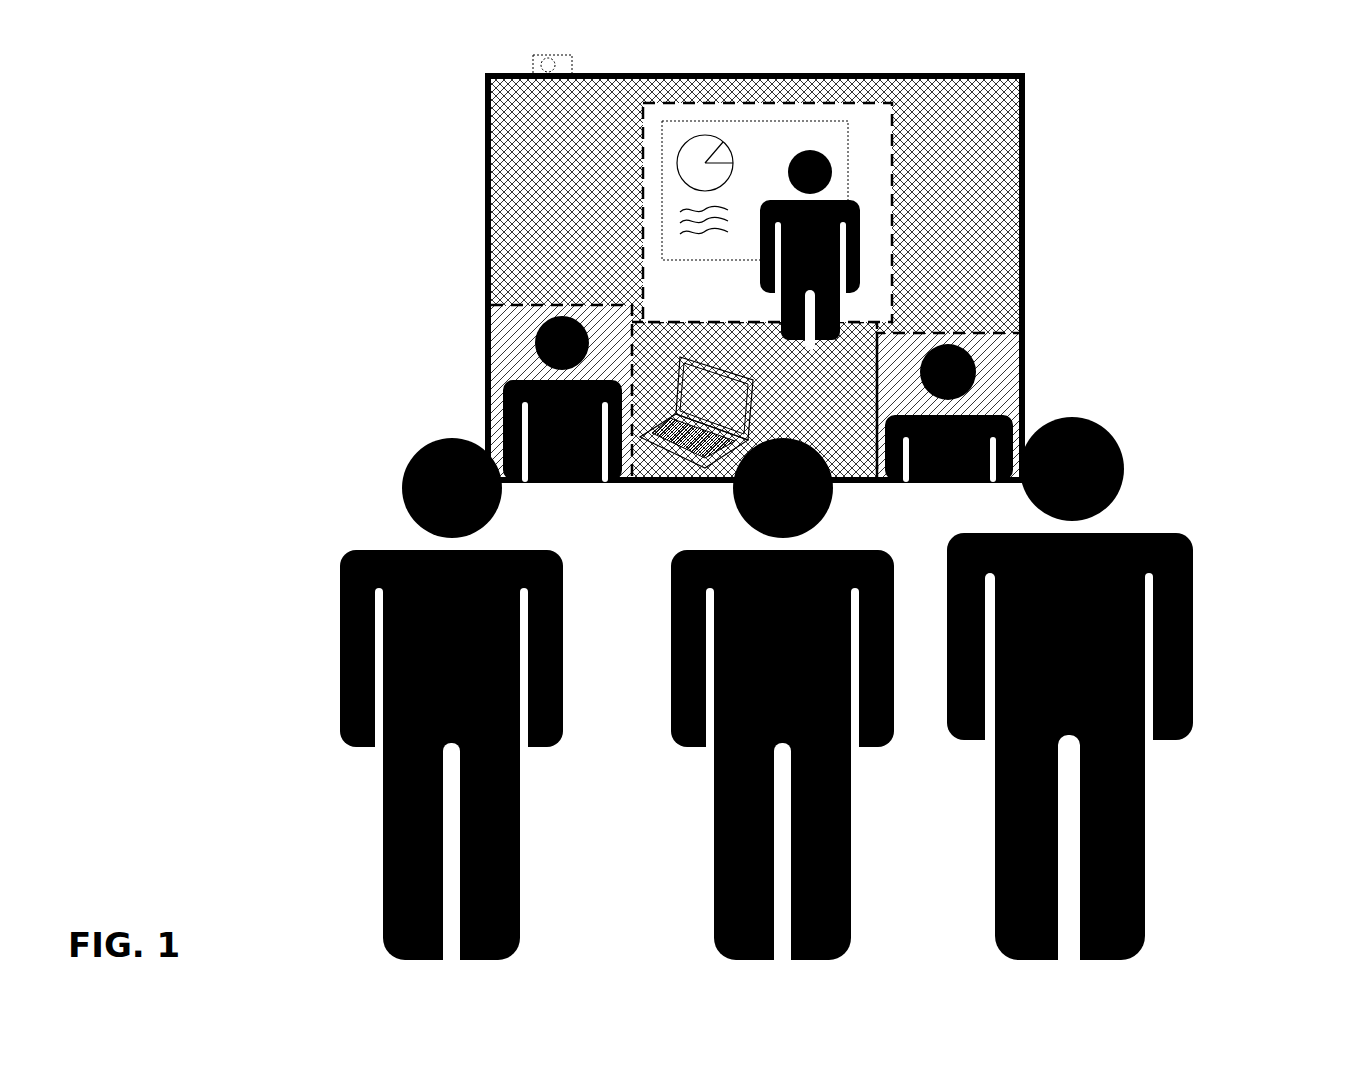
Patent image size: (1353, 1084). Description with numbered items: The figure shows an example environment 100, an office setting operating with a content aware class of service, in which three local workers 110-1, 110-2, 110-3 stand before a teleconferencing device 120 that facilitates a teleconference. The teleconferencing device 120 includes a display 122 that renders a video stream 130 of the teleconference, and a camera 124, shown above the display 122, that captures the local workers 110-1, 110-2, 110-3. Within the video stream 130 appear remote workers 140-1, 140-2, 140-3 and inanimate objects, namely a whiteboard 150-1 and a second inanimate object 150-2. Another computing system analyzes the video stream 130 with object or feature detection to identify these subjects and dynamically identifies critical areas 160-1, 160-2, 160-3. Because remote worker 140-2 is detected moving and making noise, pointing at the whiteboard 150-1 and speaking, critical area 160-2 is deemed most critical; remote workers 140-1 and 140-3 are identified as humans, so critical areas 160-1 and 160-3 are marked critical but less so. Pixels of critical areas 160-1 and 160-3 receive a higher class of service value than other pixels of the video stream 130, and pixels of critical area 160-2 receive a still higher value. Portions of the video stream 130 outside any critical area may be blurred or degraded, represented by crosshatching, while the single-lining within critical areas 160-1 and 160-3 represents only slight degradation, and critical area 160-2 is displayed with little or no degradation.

The example environment 100 is at (1236, 133).
The local worker 110-1 is at (342, 697).
The local worker 110-2 is at (716, 896).
The local worker 110-3 is at (1144, 873).
The teleconferencing device 120 is at (411, 225).
The display 122 is at (487, 77).
The camera 124 is at (574, 62).
The video stream 130 is at (598, 200).
The remote worker 140-1 is at (593, 418).
The remote worker 140-2 is at (839, 239).
The remote worker 140-3 is at (977, 452).
The whiteboard 150-1 is at (702, 243).
The inanimate object 150-2 is at (740, 407).
The critical area 160-1 is at (488, 393).
The critical area 160-2 is at (768, 100).
The critical area 160-3 is at (1025, 400).